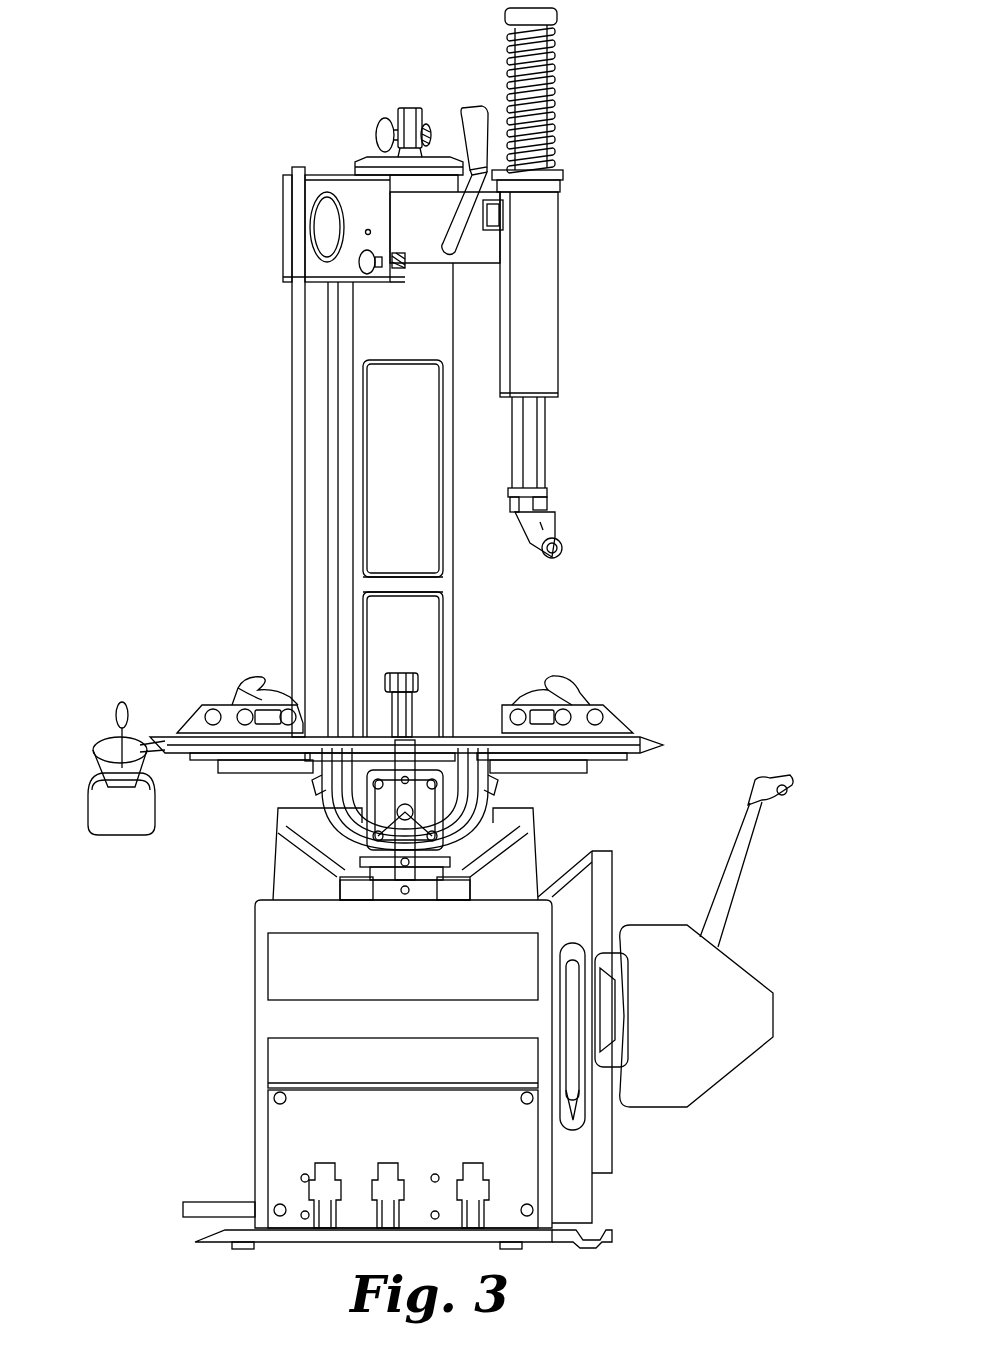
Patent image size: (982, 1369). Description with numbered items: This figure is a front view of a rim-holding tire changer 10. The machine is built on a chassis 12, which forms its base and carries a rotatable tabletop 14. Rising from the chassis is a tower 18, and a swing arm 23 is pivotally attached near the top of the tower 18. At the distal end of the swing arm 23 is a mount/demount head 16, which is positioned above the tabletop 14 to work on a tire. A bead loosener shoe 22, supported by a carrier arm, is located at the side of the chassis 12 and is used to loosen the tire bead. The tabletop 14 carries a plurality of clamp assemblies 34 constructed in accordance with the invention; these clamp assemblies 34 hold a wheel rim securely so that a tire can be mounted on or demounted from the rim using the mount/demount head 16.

The rim-holding tire changer 10 is at (185, 188).
The chassis 12 is at (598, 1196).
The rotatable tabletop 14 is at (472, 735).
The mount/demount head 16 is at (560, 522).
The tower 18 is at (455, 608).
The bead loosener shoe 22 is at (706, 1032).
The swing arm 23 is at (556, 250).
The clamp assemblies 34 is at (405, 668).